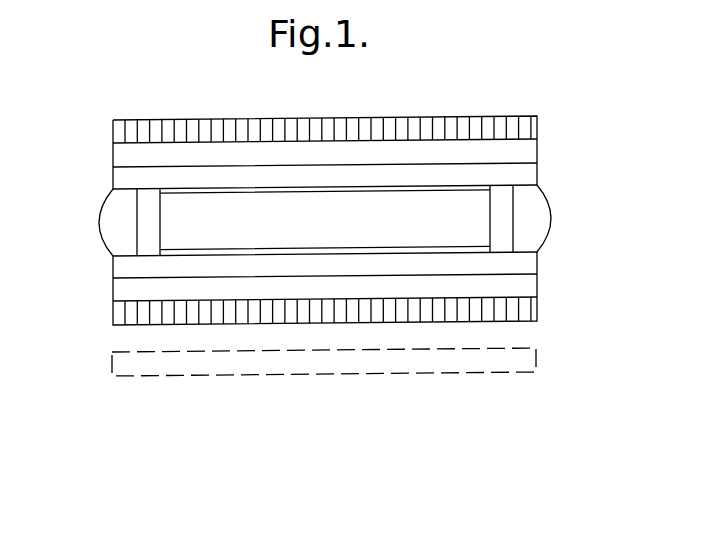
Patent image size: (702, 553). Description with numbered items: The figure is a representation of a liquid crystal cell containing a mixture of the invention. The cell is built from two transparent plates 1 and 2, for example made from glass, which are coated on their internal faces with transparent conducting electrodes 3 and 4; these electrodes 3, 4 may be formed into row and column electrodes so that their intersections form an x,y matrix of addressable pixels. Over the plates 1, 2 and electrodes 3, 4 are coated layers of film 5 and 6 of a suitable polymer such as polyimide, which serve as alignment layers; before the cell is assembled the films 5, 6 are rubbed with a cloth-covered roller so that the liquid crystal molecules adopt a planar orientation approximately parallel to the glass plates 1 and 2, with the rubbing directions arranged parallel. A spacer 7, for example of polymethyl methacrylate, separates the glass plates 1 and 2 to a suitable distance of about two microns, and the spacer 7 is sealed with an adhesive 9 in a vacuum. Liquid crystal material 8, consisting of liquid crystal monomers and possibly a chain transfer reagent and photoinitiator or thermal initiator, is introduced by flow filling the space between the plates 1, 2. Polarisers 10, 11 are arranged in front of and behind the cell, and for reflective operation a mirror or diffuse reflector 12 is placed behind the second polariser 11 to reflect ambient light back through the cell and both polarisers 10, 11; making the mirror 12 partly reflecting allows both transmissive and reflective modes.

The transparent plate 1 is at (178, 152).
The transparent plate 2 is at (153, 296).
The transparent conducting electrode 3 is at (359, 172).
The transparent conducting electrode 4 is at (433, 270).
The layer of film 5 is at (434, 189).
The layer of film 6 is at (483, 254).
The spacer 7 is at (505, 233).
The liquid crystal material 8 is at (178, 218).
The adhesive 9 is at (118, 241).
The polariser 10 is at (138, 136).
The polariser 11 is at (127, 314).
The mirror or diffuse reflector 12 is at (303, 369).